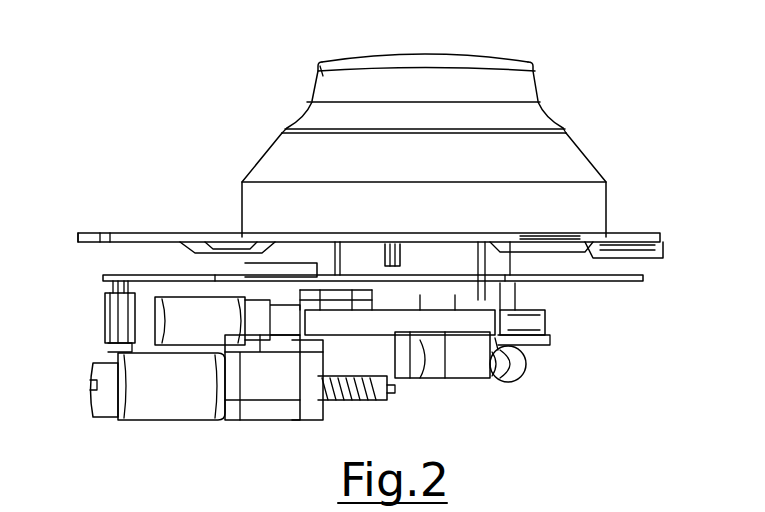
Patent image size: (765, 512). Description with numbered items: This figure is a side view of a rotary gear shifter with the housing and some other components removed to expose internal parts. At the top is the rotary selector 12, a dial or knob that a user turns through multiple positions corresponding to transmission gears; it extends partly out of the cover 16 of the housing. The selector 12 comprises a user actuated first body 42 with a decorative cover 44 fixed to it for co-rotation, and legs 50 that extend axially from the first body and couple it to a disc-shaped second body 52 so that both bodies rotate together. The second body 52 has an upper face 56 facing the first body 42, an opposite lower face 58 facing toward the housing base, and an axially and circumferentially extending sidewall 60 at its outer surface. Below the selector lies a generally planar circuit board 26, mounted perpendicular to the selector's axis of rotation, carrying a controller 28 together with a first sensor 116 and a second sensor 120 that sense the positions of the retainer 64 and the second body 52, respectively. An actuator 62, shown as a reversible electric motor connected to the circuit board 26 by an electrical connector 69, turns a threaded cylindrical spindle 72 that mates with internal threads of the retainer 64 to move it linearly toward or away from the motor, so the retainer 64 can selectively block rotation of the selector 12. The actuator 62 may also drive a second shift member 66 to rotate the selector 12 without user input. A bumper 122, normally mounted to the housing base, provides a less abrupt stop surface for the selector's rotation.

The rotary selector 12 is at (445, 129).
The cover 16 is at (580, 172).
The circuit board 26 is at (636, 283).
The controller 28 is at (258, 262).
The first body 42 is at (296, 94).
The decorative cover 44 is at (321, 75).
The legs 50 is at (481, 256).
The second body 52 is at (590, 325).
The upper face 56 is at (532, 310).
The lower face 58 is at (550, 342).
The sidewall 60 is at (546, 314).
The actuator 62 is at (158, 400).
The retainer 64 is at (251, 390).
The second shift member 66 is at (268, 290).
The electrical connector 69 is at (116, 309).
The spindle 72 is at (366, 397).
The first sensor 116 is at (200, 283).
The second sensor 120 is at (447, 283).
The bumper 122 is at (496, 373).